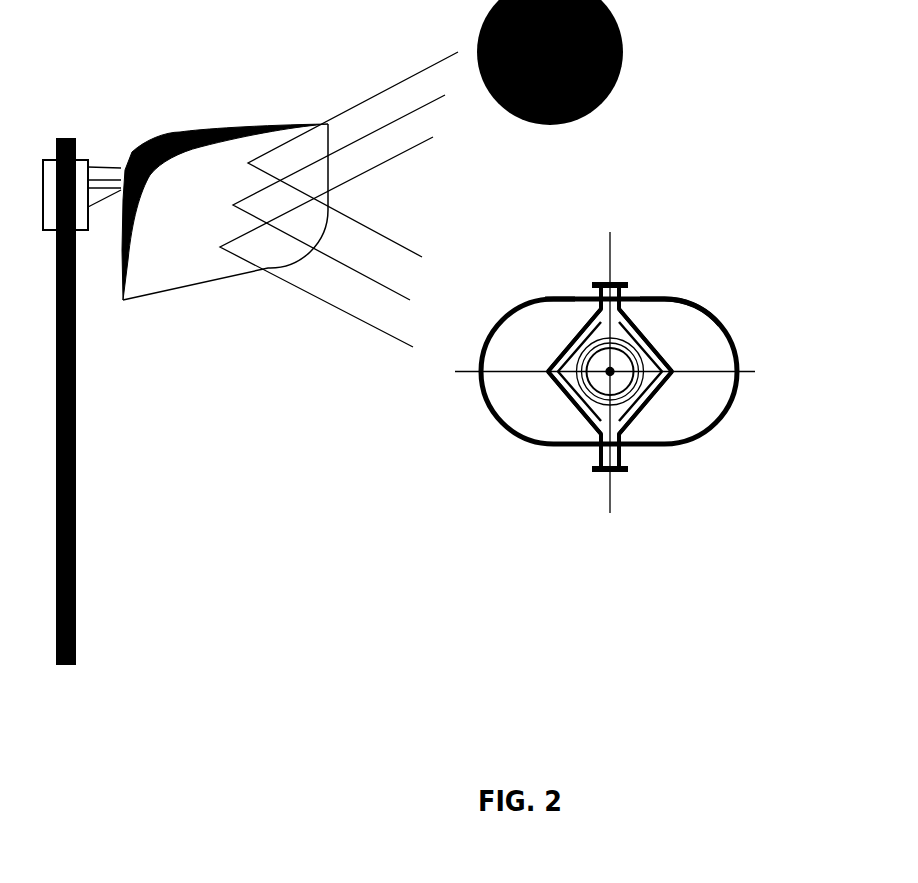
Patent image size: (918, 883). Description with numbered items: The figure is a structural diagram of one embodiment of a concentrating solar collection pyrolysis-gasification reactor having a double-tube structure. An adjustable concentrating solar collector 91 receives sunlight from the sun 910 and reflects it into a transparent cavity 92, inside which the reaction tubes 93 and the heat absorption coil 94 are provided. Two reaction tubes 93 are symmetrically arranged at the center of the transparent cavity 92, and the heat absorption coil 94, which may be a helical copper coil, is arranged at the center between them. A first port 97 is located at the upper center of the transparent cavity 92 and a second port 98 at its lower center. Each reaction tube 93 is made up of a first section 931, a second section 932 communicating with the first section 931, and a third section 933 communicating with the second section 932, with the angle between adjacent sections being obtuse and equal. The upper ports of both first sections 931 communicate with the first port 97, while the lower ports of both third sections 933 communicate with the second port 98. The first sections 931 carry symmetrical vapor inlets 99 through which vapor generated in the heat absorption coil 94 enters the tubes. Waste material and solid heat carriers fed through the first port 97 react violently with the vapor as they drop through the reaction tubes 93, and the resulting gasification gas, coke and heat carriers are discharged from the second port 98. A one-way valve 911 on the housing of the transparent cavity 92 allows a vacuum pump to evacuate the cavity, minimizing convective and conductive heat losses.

The adjustable concentrating solar collector 91 is at (73, 570).
The sun 910 is at (615, 88).
The one-way valve 911 is at (560, 294).
The transparent cavity 92 is at (522, 358).
The reaction tubes 93 is at (628, 435).
The first section 931 is at (570, 328).
The second section 932 is at (545, 378).
The third section 933 is at (567, 390).
The heat absorption coil 94 is at (648, 392).
The first port 97 is at (611, 281).
The second port 98 is at (597, 462).
The vapor inlets 99 is at (650, 296).